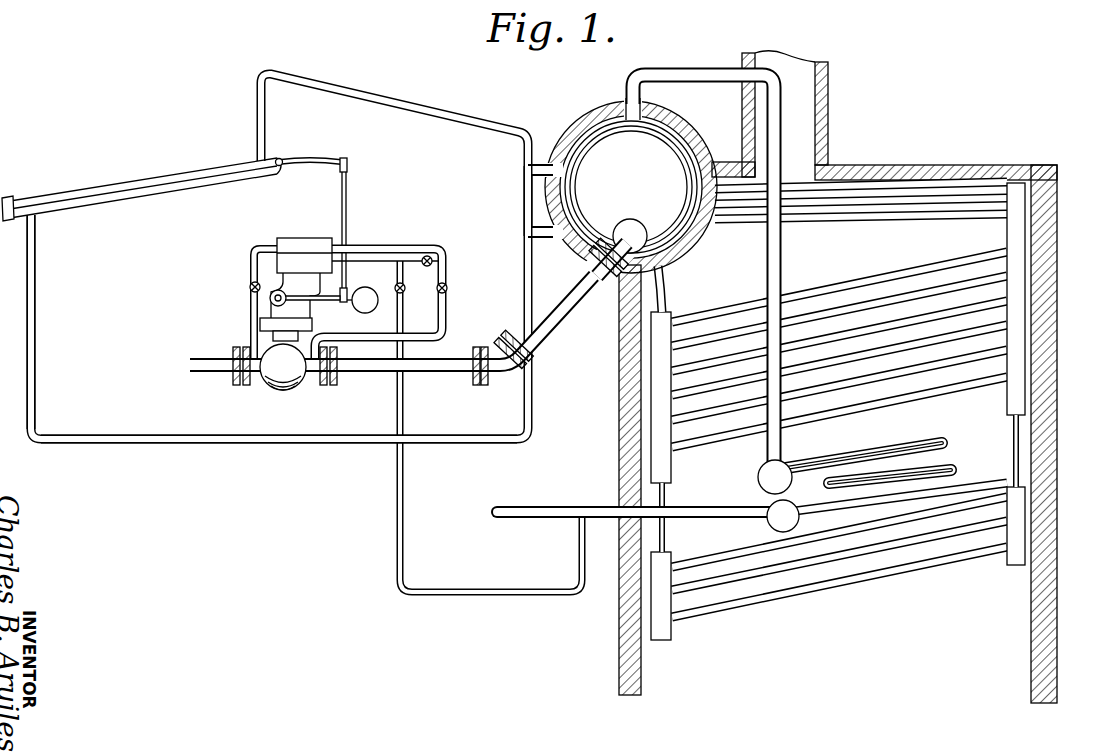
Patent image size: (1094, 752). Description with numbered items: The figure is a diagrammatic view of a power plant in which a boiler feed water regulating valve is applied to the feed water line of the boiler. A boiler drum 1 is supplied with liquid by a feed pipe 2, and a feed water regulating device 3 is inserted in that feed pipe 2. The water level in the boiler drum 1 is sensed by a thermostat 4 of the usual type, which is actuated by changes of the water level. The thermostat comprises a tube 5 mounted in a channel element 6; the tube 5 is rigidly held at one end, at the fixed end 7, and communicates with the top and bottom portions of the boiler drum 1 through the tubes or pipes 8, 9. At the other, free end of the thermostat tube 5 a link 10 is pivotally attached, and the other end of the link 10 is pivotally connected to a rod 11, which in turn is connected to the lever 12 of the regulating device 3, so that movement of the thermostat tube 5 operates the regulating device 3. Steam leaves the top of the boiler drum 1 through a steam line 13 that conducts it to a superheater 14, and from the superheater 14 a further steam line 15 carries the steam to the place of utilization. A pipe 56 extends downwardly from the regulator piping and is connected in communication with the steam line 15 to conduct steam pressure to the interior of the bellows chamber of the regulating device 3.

The boiler drum 1 is at (611, 153).
The feed pipe 2 is at (554, 335).
The feed water regulating device 3 is at (278, 237).
The thermostat 4 is at (161, 157).
The tube 5 is at (204, 170).
The channel element 6 is at (50, 193).
The fixed end 7 is at (14, 205).
The tube or pipe 8 is at (405, 100).
The tube or pipe 9 is at (263, 444).
The link 10 is at (303, 160).
The rod 11 is at (347, 214).
The lever 12 is at (318, 300).
The steam line 13 is at (677, 74).
The superheater 14 is at (957, 456).
The steam line 15 is at (537, 522).
The pipe 56 is at (404, 421).